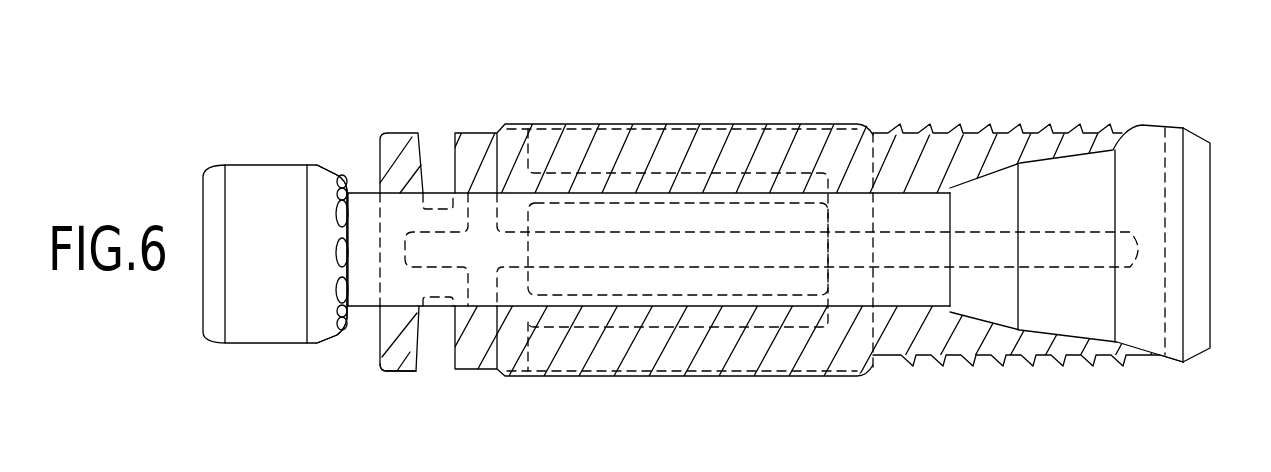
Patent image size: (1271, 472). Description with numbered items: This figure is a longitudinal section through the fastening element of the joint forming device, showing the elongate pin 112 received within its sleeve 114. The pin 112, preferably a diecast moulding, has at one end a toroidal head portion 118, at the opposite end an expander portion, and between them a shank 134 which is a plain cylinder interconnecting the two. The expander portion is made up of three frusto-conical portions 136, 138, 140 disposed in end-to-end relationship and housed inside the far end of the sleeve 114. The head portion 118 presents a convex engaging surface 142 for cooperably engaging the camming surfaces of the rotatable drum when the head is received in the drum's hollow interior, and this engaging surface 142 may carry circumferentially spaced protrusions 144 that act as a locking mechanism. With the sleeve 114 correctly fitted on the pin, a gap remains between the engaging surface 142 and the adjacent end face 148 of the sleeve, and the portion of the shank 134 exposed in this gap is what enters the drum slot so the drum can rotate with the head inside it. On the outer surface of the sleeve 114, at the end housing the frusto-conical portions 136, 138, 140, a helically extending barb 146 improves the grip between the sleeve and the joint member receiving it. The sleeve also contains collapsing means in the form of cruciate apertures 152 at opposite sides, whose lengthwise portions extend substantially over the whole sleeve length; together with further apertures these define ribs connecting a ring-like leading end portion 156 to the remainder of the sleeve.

The head portion 118 is at (252, 188).
The convex engaging surface 142 is at (320, 187).
The protrusions 144 is at (347, 180).
The cruciate apertures 152 is at (437, 250).
The sleeve 114 is at (683, 122).
The elongate pin 112 is at (917, 213).
The frusto-conical portion 136 is at (1007, 182).
The frusto-conical portion 140 is at (1155, 158).
The shank 134 is at (362, 315).
The end face 148 is at (382, 352).
The ring-like leading end portion 156 is at (398, 357).
The helically extending barb 146 is at (970, 360).
The frusto-conical portion 138 is at (1060, 323).